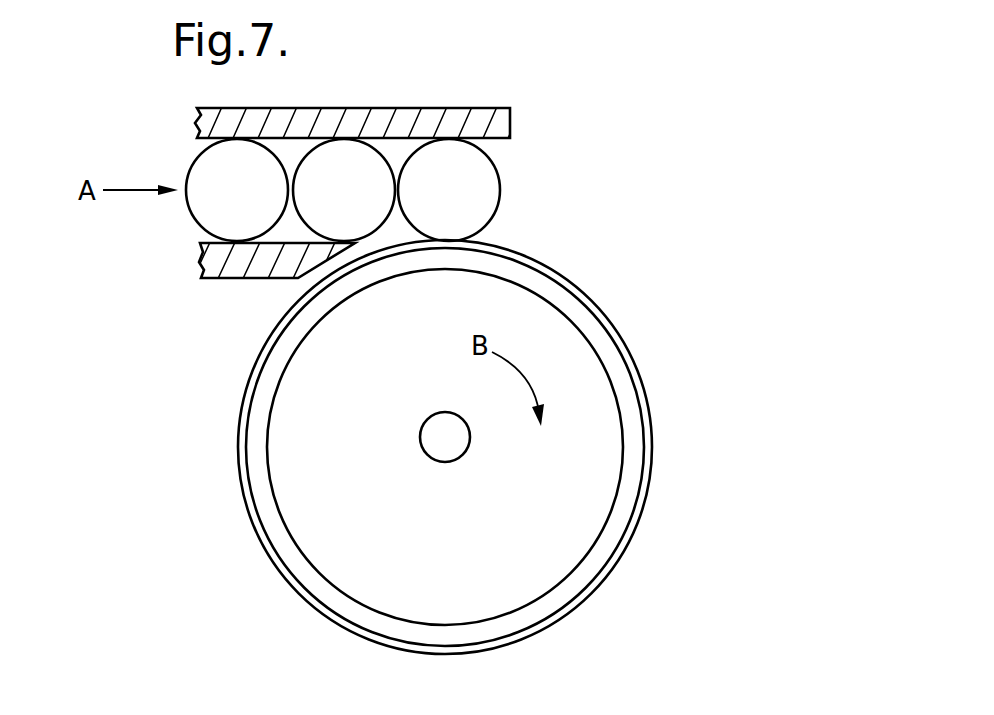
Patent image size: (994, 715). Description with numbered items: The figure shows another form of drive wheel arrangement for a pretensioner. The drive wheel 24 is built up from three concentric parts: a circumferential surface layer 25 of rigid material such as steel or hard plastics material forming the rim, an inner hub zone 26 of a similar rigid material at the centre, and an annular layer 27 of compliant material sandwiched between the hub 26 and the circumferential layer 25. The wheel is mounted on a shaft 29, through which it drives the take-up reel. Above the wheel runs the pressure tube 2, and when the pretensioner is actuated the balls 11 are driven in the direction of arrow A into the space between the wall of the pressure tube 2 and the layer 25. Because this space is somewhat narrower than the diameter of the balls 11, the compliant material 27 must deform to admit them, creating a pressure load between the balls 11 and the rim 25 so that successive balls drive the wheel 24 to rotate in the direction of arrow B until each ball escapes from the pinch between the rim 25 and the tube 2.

The pressure tube 2 is at (448, 108).
The ball 11 is at (500, 190).
The drive wheel 24 is at (476, 447).
The circumferential surface layer 25 is at (280, 570).
The inner hub zone 26 is at (558, 542).
The annular layer 27 is at (593, 332).
The shaft 29 is at (430, 436).